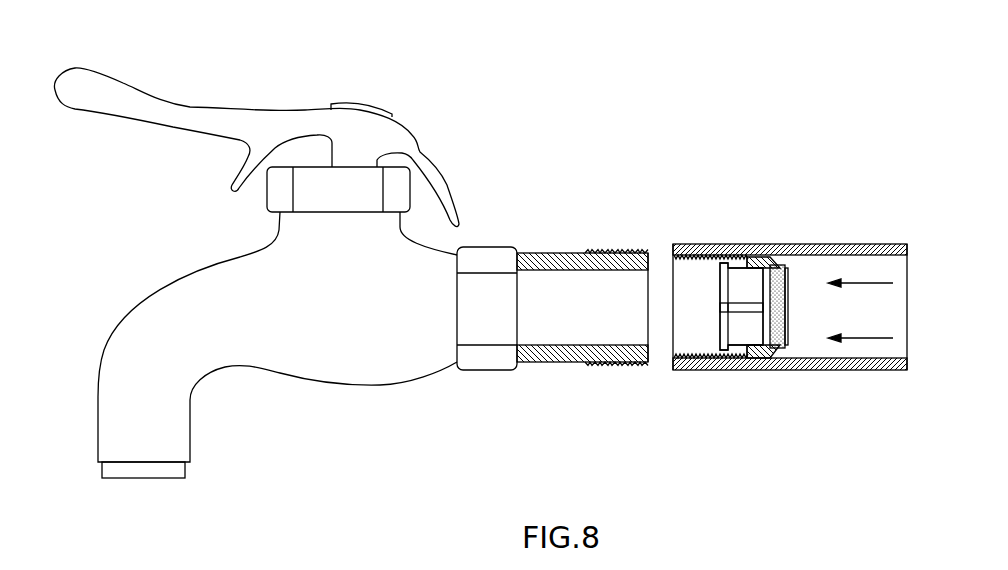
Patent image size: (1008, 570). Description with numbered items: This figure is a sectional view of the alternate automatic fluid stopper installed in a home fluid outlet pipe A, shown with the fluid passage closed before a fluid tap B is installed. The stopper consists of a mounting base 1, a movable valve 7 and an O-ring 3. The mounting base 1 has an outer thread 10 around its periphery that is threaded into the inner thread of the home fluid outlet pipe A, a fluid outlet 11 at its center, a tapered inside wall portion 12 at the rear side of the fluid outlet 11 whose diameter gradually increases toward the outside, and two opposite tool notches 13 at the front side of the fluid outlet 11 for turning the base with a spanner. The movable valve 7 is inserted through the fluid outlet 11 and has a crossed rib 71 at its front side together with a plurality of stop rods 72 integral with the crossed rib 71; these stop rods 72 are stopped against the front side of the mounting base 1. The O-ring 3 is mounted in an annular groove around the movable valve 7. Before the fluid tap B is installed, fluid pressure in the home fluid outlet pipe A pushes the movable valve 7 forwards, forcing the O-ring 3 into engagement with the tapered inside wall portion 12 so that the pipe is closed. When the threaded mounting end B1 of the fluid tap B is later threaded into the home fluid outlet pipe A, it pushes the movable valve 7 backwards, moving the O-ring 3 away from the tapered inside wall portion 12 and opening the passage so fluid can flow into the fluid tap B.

The home fluid outlet pipe A is at (842, 243).
The fluid tap B is at (305, 108).
The threaded mounting end B1 is at (613, 252).
The mounting base 1 is at (766, 255).
The O-ring 3 is at (782, 262).
The movable valve 7 is at (802, 256).
The crossed rib 71 is at (737, 275).
The stop rods 72 is at (723, 262).
The outer thread 10 is at (765, 363).
The fluid outlet 11 is at (755, 363).
The tapered inside wall portion 12 is at (780, 363).
The tool notches 13 is at (752, 262).